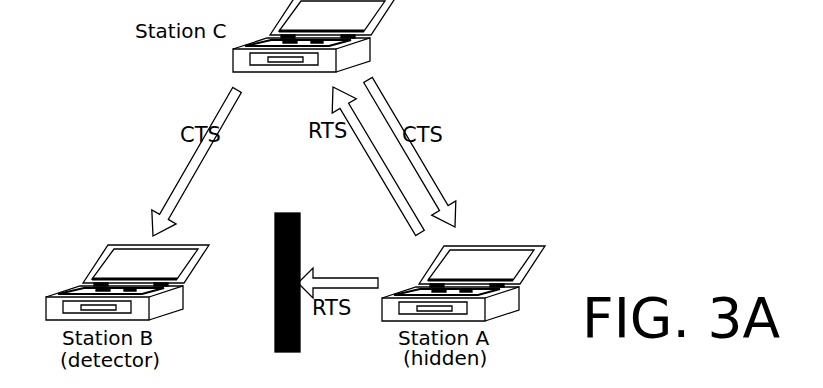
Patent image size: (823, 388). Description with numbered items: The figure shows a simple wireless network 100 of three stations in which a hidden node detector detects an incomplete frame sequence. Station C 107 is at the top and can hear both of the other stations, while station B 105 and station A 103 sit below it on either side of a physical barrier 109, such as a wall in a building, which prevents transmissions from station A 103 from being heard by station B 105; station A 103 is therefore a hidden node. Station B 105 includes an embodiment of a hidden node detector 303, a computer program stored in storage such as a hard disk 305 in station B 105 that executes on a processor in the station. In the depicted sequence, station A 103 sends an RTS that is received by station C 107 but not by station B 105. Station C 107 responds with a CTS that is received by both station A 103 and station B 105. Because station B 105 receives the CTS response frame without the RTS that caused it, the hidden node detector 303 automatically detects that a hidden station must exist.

The network 100 is at (472, 97).
The station C 107 is at (373, 41).
The station B 105 is at (140, 293).
The station A 103 is at (545, 252).
The physical barrier 109 is at (300, 221).
The hidden node detector 303 is at (144, 327).
The hard disk 305 is at (75, 325).